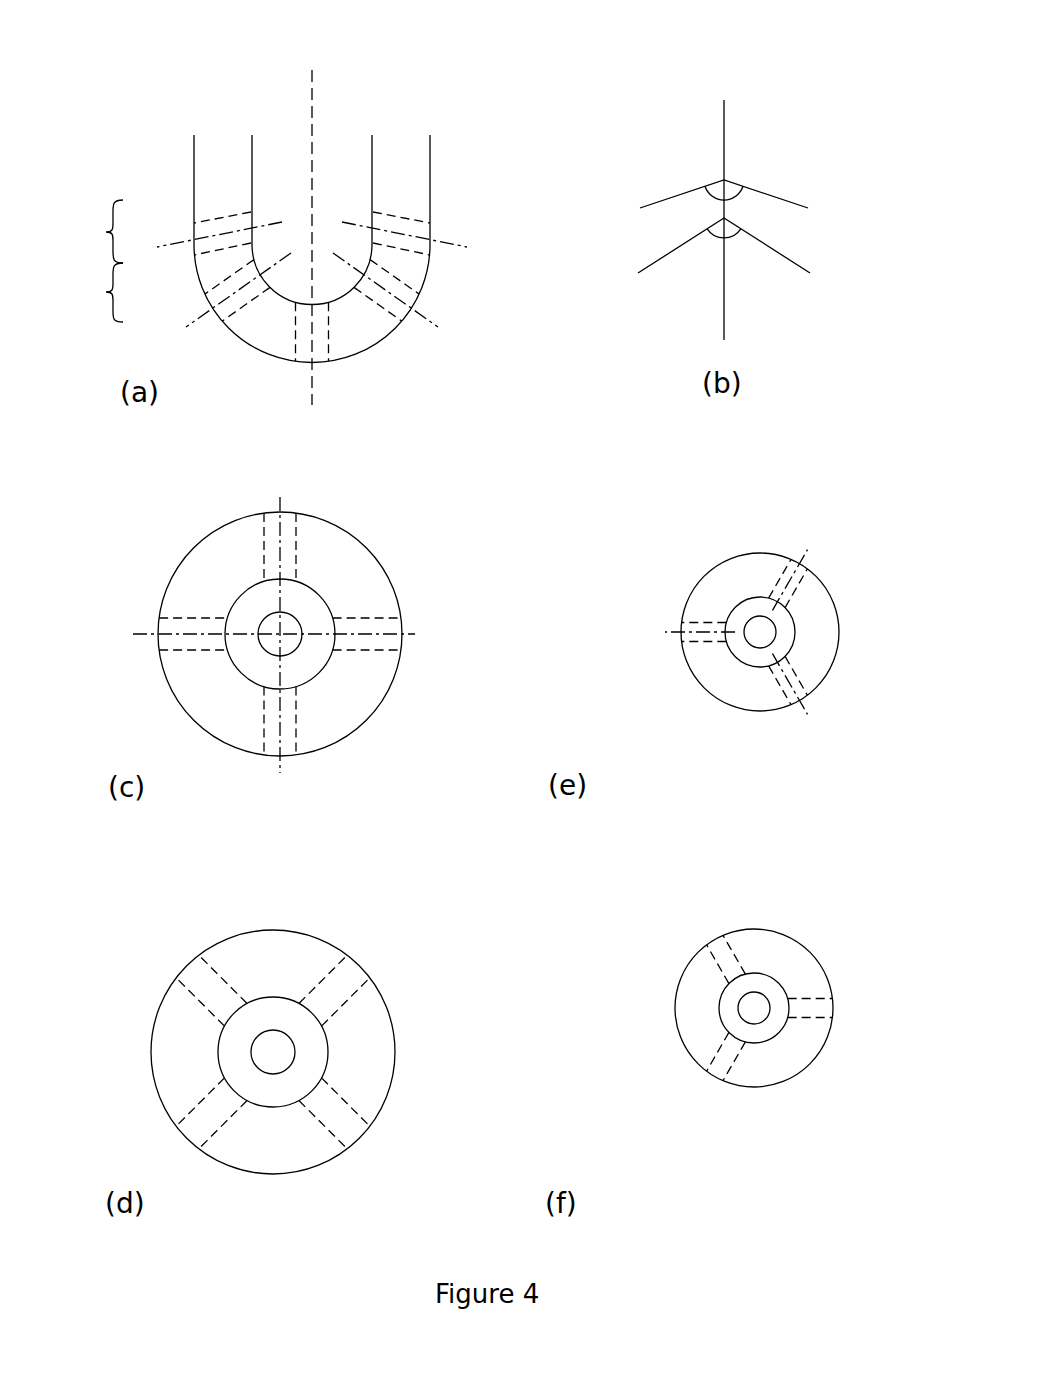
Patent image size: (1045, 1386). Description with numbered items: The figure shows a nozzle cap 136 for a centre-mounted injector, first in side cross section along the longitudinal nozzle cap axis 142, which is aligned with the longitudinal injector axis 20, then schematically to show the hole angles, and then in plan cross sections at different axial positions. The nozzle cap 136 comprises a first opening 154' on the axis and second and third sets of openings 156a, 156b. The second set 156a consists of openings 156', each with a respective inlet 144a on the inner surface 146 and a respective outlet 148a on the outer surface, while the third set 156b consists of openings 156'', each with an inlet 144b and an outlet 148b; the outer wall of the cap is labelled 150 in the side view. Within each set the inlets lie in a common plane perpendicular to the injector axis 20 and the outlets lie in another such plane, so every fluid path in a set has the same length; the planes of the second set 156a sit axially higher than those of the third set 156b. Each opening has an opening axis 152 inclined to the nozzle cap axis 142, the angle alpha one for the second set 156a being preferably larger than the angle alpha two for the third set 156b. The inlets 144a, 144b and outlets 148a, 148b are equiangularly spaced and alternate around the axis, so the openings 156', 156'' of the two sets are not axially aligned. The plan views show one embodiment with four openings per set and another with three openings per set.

The nozzle cap 136 is at (305, 185).
The longitudinal injector axis 20 is at (245, 208).
The longitudinal nozzle cap axis 142 is at (310, 100).
The inner surface 146 is at (252, 159).
The outer tube 150 is at (430, 157).
The inlet 144a is at (397, 214).
The inlet 144b is at (312, 1020).
The outlet 148a is at (432, 233).
The outlet 148b is at (352, 960).
The opening axis 152 is at (228, 295).
The first opening 154' is at (514, 767).
The opening 156' is at (466, 464).
The opening 156'' is at (524, 701).
The second set of openings 156a is at (917, 177).
The third set of openings 156b is at (646, 976).